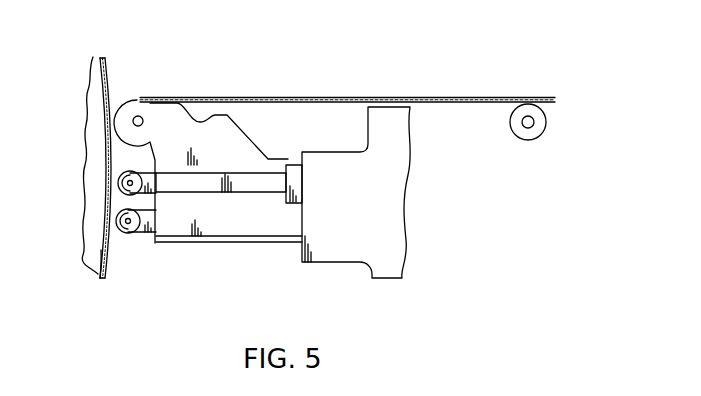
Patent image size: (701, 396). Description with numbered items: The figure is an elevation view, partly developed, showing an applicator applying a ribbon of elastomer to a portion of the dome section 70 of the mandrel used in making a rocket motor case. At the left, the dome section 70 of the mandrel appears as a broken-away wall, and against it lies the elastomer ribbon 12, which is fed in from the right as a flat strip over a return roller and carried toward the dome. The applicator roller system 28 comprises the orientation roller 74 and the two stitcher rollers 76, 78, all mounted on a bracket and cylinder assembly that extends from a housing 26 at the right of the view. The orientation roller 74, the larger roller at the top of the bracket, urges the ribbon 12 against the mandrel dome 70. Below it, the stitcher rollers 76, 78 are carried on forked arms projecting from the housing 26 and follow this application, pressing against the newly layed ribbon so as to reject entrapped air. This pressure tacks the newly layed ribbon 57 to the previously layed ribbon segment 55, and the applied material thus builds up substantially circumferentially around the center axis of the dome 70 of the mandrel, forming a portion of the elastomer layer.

The ribbon 12 is at (331, 97).
The housing 26 is at (387, 235).
The applicator roller system 28 is at (245, 83).
The previously layed ribbon segment 55 is at (102, 57).
The newly layed ribbon 57 is at (110, 257).
The dome section 70 is at (96, 111).
The orientation roller 74 is at (127, 102).
The stitcher roller 76 is at (120, 183).
The stitcher roller 78 is at (118, 218).